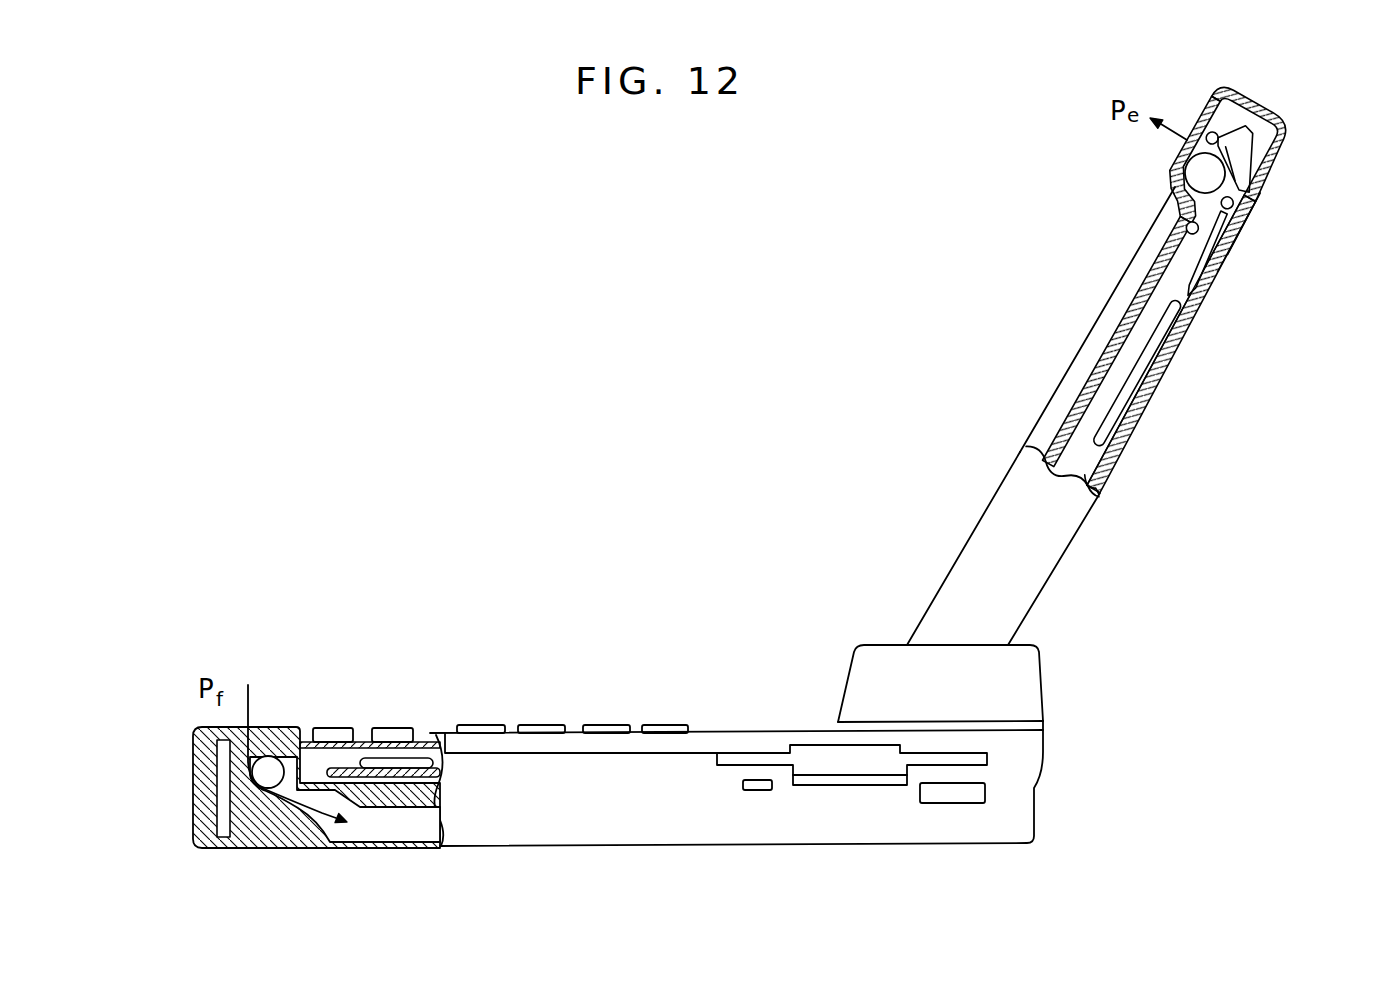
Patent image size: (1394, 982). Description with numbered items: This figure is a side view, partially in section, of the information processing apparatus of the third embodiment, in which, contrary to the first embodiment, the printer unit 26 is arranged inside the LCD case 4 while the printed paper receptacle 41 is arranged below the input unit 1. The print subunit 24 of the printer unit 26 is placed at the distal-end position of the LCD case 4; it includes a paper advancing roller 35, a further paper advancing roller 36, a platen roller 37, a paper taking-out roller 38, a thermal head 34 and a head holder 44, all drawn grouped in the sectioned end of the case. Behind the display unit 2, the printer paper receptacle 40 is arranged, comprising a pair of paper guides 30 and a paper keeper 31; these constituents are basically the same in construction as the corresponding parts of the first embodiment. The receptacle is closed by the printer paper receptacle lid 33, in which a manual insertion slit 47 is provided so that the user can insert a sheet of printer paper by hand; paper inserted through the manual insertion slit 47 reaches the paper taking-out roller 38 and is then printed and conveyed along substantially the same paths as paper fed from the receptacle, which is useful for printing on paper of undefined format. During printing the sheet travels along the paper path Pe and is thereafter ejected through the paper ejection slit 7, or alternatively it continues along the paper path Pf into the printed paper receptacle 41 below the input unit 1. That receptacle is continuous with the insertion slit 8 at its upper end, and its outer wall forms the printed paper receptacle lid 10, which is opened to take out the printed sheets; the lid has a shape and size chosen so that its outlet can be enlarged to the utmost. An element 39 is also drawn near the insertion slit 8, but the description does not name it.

The input unit 1 is at (393, 726).
The display unit 2 is at (1066, 374).
The LCD case 4 is at (1048, 558).
The paper ejection slit 7 is at (1182, 148).
The insertion slit 8 is at (298, 682).
The printed paper receptacle lid 10 is at (522, 866).
The print subunit 24 is at (1359, 92).
The printer unit 26 is at (1363, 149).
The paper guides 30 is at (1131, 303).
The paper keeper 31 is at (1159, 482).
The printer paper receptacle lid 33 is at (1145, 412).
The thermal head 34 is at (1306, 79).
The paper advancing roller 35 is at (1309, 252).
The paper advancing roller 36 is at (1209, 134).
The platen roller 37 is at (1188, 178).
The paper taking-out roller 38 is at (1186, 230).
The ball 39 is at (266, 790).
The printer paper receptacle 40 is at (1145, 347).
The printed paper receptacle 41 is at (400, 823).
The head holder 44 is at (1233, 206).
The manual insertion slit 47 is at (1190, 300).